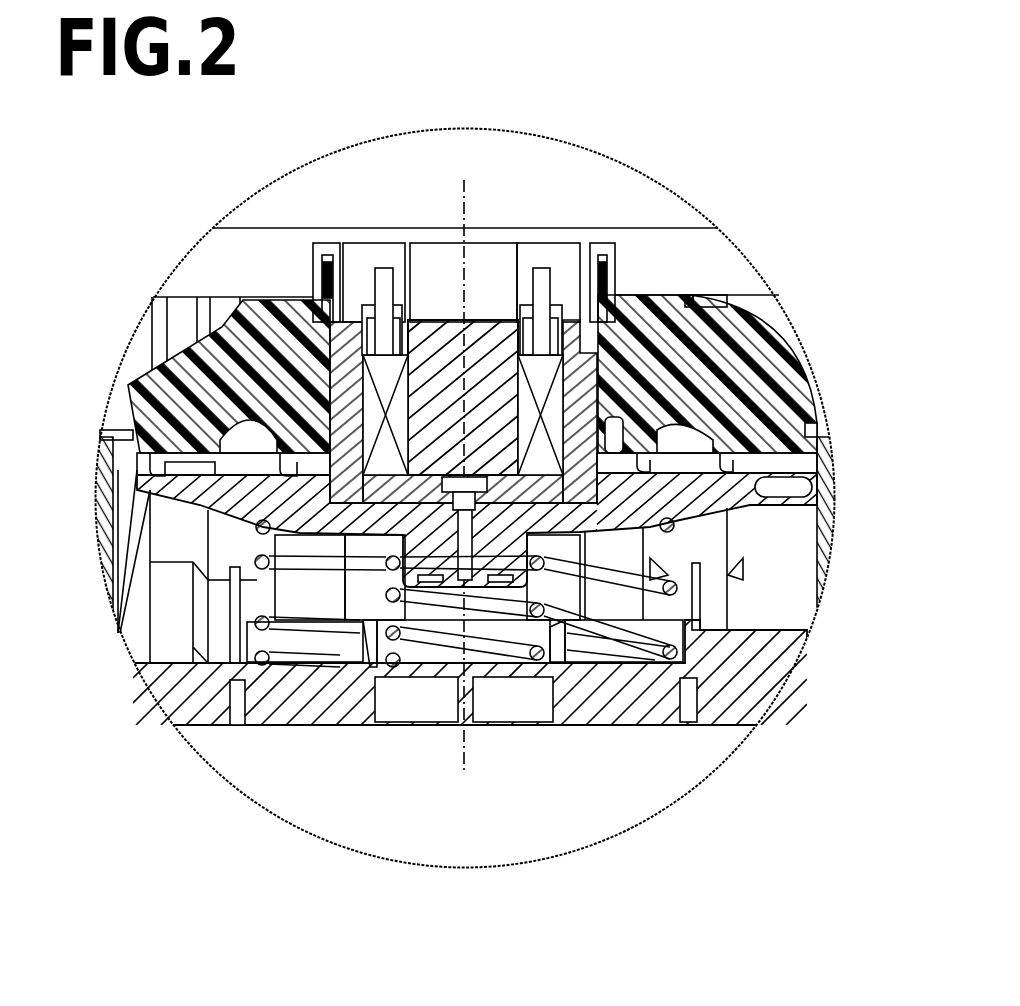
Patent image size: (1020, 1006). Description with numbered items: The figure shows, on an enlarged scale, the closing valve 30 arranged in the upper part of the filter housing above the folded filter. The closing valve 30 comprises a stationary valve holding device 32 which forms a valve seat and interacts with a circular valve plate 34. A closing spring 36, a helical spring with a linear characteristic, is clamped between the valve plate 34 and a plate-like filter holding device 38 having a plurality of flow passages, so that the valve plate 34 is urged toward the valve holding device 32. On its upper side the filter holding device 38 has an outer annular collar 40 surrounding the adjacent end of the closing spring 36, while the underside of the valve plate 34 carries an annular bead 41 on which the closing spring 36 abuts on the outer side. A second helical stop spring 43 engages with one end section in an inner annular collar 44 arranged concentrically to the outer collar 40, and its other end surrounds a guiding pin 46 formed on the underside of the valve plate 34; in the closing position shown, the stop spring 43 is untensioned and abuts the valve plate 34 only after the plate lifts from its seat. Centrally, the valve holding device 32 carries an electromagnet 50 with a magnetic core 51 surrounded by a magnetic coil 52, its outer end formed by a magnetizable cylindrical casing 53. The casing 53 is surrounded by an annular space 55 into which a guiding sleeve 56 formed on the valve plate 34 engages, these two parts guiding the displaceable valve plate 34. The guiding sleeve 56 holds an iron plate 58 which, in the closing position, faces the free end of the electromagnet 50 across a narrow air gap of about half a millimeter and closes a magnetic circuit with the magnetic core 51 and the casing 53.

The closing valve 30 is at (792, 322).
The valve holding device 32 is at (790, 400).
The valve plate 34 is at (753, 505).
The closing spring 36 is at (652, 650).
The filter holding device 38 is at (745, 688).
The outer annular collar 40 is at (242, 643).
The annular bead 41 is at (262, 550).
The stop spring 43 is at (432, 628).
The inner annular collar 44 is at (370, 644).
The guiding pin 46 is at (498, 555).
The electromagnet 50 is at (431, 275).
The magnetic core 51 is at (492, 335).
The magnetic coil 52 is at (538, 373).
The cylindrical casing 53 is at (353, 383).
The annular space 55 is at (215, 330).
The guiding sleeve 56 is at (247, 420).
The iron plate 58 is at (145, 462).